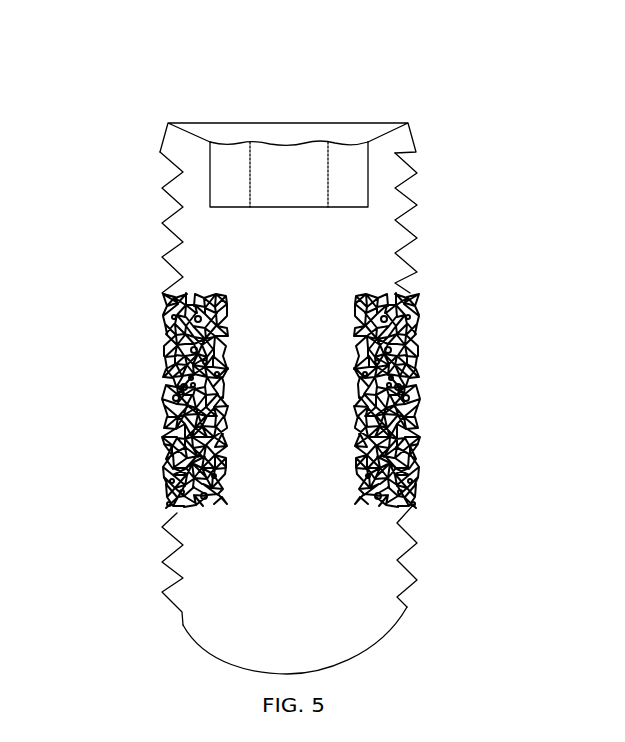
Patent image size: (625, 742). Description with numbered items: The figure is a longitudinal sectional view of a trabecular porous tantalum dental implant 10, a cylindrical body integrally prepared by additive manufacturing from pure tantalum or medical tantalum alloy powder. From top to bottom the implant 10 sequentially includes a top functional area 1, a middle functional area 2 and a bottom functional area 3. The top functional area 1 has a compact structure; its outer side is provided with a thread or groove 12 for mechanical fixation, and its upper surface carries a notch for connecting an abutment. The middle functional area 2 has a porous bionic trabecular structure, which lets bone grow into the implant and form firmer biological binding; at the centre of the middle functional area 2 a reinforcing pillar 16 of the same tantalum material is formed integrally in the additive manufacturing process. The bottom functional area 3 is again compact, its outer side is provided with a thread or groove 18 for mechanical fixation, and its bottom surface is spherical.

The trabecular porous tantalum dental implant 10 is at (212, 106).
The top functional area 1 is at (395, 198).
The thread or groove 12 is at (165, 218).
The middle functional area 2 is at (393, 392).
The reinforcing pillar 16 is at (238, 412).
The bottom functional area 3 is at (380, 557).
The thread or groove 18 is at (175, 587).